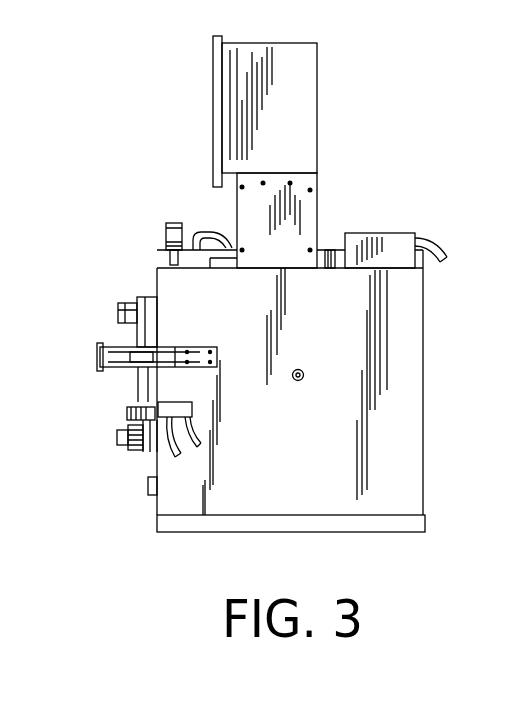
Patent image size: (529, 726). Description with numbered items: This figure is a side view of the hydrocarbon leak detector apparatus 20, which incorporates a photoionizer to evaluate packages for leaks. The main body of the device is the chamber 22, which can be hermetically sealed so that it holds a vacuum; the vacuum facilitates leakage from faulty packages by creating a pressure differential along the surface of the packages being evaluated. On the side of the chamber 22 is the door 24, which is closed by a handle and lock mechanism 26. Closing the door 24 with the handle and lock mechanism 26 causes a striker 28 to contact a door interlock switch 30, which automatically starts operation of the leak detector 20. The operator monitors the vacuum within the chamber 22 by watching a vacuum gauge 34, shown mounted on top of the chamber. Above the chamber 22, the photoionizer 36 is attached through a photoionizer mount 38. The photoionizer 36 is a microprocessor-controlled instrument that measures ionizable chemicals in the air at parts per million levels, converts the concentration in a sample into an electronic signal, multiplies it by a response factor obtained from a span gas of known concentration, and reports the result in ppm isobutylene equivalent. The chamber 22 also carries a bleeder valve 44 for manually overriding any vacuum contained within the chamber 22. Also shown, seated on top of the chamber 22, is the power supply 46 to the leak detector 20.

The hydrocarbon leak detector apparatus 20 is at (152, 168).
The chamber 22 is at (380, 497).
The door 24 is at (135, 333).
The handle and lock mechanism 26 is at (172, 402).
The striker 28 is at (143, 452).
The door interlock switch 30 is at (117, 437).
The vacuum gauge 34 is at (167, 240).
The photoionizer 36 is at (303, 120).
The photoionizer mount 38 is at (297, 213).
The bleeder valve 44 is at (305, 375).
The power supply 46 is at (372, 237).